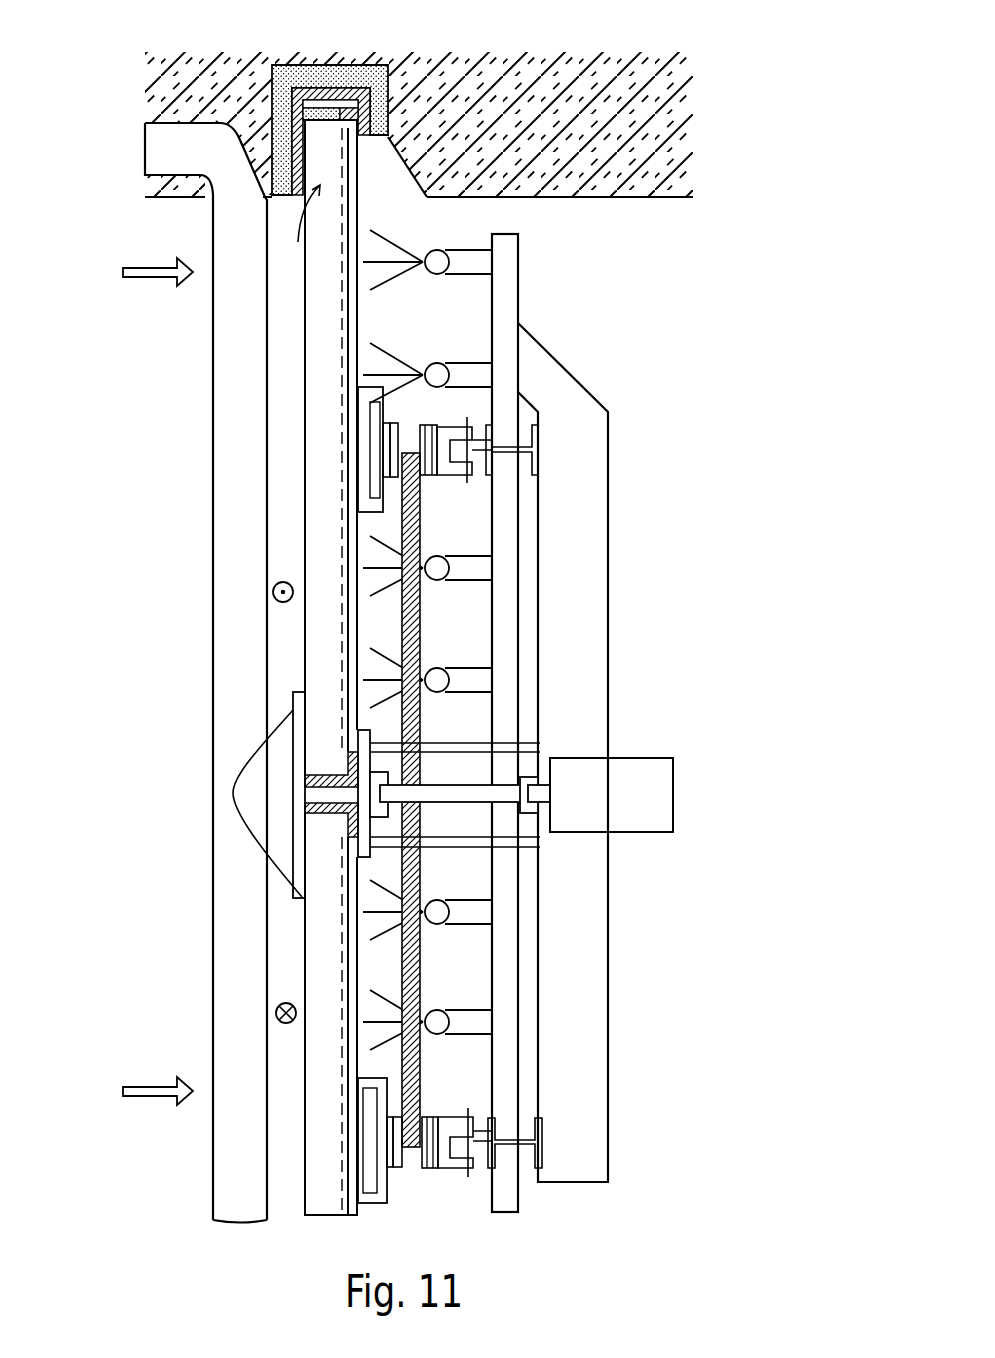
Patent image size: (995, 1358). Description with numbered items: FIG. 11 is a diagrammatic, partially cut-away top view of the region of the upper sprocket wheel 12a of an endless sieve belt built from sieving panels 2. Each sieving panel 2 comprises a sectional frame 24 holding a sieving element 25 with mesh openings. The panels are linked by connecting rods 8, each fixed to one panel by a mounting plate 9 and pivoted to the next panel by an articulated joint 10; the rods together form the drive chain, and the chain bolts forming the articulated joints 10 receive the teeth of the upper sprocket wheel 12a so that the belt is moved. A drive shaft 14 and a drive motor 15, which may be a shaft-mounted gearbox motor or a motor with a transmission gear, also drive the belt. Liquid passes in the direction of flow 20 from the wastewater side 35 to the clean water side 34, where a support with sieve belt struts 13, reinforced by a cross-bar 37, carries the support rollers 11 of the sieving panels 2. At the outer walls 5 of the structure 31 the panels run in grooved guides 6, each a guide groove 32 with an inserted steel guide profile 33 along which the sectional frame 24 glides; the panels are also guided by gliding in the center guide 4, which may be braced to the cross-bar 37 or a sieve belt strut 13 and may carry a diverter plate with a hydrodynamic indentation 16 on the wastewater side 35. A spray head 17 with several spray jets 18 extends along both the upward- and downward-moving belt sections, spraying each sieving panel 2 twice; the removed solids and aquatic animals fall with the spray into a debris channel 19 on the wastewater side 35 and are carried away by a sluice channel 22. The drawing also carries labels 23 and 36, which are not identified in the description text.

The sieving panel 2 is at (355, 323).
The center guide 4 is at (302, 795).
The outer wall 5 is at (508, 197).
The grooved guide 6 is at (303, 242).
The connecting rod 8 is at (390, 428).
The mounting plate 9 is at (372, 503).
The articulated joint 10 is at (410, 456).
The support roller 11 is at (477, 450).
The upper sprocket wheel 12a is at (402, 633).
The sieve belt strut 13 is at (508, 447).
The drive shaft 14 is at (463, 793).
The drive motor 15 is at (630, 805).
The hydrodynamic indentation 16 is at (233, 807).
The spray head 17 is at (560, 905).
The spray jet 18 is at (447, 273).
The debris channel 19 is at (240, 573).
The direction of flow 20 is at (163, 286).
The sluice channel 22 is at (220, 162).
The pivot axis 23 is at (274, 598).
The sectional frame 24 is at (335, 105).
The sieving element 25 is at (345, 360).
The structure 31 is at (555, 110).
The guide groove 32 is at (400, 65).
The steel guide profile 33 is at (313, 90).
The clean water side 34 is at (840, 346).
The wastewater side 35 is at (70, 343).
The chamfered wall portion 36 is at (412, 150).
The cross-bar 37 is at (572, 636).